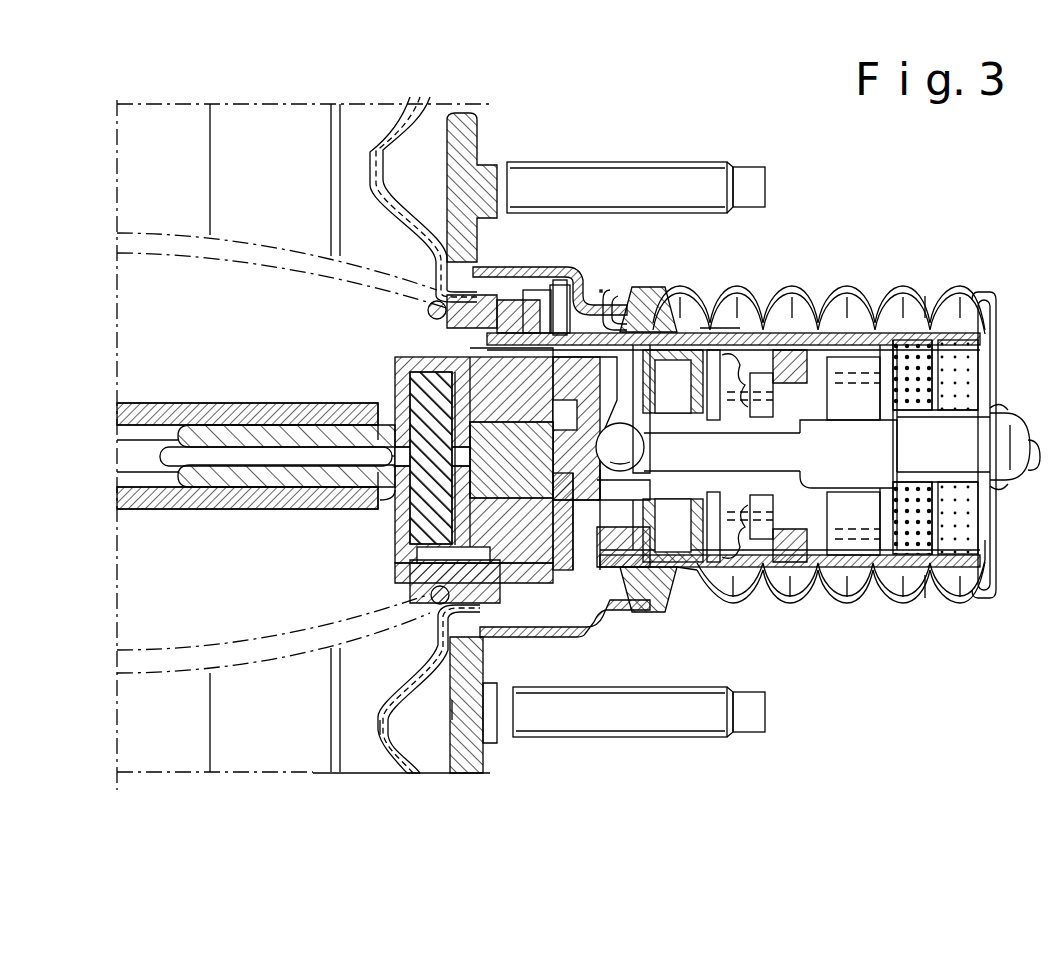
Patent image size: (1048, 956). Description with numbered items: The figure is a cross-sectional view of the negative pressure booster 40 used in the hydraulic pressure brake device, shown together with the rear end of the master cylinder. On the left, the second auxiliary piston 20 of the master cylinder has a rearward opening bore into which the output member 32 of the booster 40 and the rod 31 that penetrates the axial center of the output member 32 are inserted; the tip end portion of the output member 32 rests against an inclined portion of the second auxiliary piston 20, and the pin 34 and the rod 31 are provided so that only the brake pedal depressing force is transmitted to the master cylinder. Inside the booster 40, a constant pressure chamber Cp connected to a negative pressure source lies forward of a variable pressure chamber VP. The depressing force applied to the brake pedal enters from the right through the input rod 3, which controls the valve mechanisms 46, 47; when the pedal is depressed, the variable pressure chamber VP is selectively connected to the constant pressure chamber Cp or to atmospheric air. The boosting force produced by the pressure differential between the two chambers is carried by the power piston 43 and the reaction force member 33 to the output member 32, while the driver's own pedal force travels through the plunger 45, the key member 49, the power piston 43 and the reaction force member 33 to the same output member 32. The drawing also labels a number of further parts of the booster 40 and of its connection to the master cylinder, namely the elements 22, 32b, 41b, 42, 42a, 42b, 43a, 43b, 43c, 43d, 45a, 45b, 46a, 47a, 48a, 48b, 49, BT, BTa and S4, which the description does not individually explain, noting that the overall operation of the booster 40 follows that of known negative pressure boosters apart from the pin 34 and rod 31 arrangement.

The constant pressure chamber Cp is at (270, 125).
The variable pressure chamber VP is at (440, 125).
The input rod 3 is at (1007, 427).
The second auxiliary piston 20 is at (177, 505).
The outer tube 22 is at (137, 465).
The rod 31 is at (230, 457).
The output member 32 is at (390, 373).
The hub flange 32b is at (393, 553).
The reaction force member 33 is at (400, 373).
The pin 34 is at (393, 500).
The negative pressure booster 40 is at (822, 182).
The flange 41b is at (463, 122).
The flexible plate 42 is at (405, 777).
The plate inner portion 42a is at (383, 757).
The plate outer portion 42b is at (427, 777).
The power piston 43 is at (760, 420).
The housing flange 43a is at (580, 320).
The housing seal lip 43b is at (633, 300).
The housing inner portion 43c is at (790, 385).
The housing mounting plate 43d is at (483, 293).
The plunger 45 is at (623, 600).
The piston flange 45a is at (573, 603).
The piston portion 45b is at (800, 470).
The valve mechanism 46 is at (667, 597).
The spring seat 46a is at (665, 300).
The valve mechanism 47 is at (757, 597).
The bearing race 47a is at (700, 327).
The boot portion 48a is at (847, 607).
The boot portion 48b is at (910, 607).
The key member 49 is at (550, 603).
The boot BT is at (975, 318).
The boot end BTa is at (993, 537).
The seal S4 is at (677, 610).